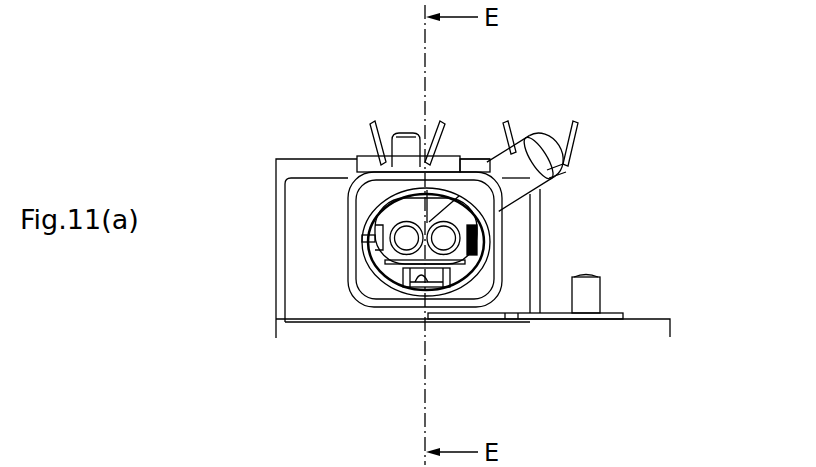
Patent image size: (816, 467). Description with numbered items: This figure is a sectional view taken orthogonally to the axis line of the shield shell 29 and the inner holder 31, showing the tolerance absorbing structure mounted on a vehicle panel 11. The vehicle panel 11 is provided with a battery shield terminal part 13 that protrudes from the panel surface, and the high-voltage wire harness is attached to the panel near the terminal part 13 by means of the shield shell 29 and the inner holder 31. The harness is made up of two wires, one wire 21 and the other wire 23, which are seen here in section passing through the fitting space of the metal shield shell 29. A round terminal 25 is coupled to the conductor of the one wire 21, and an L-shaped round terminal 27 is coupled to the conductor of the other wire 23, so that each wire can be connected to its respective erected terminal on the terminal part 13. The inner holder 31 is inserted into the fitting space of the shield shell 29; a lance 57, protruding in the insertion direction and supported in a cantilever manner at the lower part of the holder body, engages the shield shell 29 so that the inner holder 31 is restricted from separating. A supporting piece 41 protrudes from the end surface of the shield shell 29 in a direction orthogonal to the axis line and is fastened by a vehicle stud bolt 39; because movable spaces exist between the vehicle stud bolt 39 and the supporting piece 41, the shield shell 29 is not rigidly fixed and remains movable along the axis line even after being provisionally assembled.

The vehicle panel 11 is at (668, 319).
The battery shield terminal part 13 is at (276, 210).
The wire 21 is at (405, 134).
The wire 23 is at (542, 143).
The round terminal 25 is at (373, 137).
The L-shaped round terminal 27 is at (576, 139).
The shield shell 29 is at (334, 278).
The inner holder 31 is at (468, 281).
The vehicle stud bolt 39 is at (585, 276).
The supporting piece 41 is at (615, 313).
The lance 57 is at (420, 282).